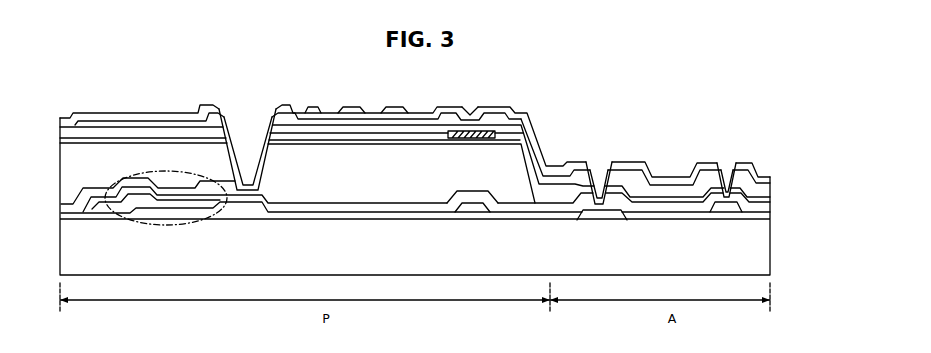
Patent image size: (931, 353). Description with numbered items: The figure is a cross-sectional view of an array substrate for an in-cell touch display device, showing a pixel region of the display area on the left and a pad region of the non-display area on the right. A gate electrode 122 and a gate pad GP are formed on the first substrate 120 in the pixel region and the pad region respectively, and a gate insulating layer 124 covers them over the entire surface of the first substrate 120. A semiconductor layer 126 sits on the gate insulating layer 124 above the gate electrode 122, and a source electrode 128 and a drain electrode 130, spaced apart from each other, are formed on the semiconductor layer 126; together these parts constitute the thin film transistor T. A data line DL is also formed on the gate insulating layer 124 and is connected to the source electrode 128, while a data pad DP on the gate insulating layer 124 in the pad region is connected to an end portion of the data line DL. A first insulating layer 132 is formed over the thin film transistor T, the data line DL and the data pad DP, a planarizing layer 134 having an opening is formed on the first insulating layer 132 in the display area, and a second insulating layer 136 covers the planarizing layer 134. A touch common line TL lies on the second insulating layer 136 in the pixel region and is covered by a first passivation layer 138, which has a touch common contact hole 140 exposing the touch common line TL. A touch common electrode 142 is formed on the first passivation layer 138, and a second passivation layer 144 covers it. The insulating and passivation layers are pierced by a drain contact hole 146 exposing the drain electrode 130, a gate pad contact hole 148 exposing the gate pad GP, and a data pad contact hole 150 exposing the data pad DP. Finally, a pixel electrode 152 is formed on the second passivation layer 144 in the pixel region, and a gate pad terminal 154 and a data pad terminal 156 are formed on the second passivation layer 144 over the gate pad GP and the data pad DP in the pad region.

The first substrate 120 is at (747, 266).
The gate electrode 122 is at (141, 219).
The gate insulating layer 124 is at (543, 214).
The semiconductor layer 126 is at (242, 204).
The source electrode 128 is at (110, 202).
The drain electrode 130 is at (265, 206).
The first insulating layer 132 is at (428, 145).
The planarizing layer 134 is at (502, 197).
The second insulating layer 136 is at (390, 141).
The first passivation layer 138 is at (360, 134).
The touch common contact hole 140 is at (466, 106).
The touch common electrode 142 is at (332, 126).
The second passivation layer 144 is at (307, 121).
The drain contact hole 146 is at (247, 158).
The gate pad contact hole 148 is at (597, 173).
The data pad contact hole 150 is at (725, 171).
The pixel electrode 152 is at (390, 106).
The gate pad terminal 154 is at (621, 162).
The data pad terminal 156 is at (746, 162).
The thin film transistor T is at (164, 170).
The touch common line TL is at (471, 131).
The data line DL is at (468, 213).
The gate pad GP is at (602, 222).
The data pad DP is at (726, 216).